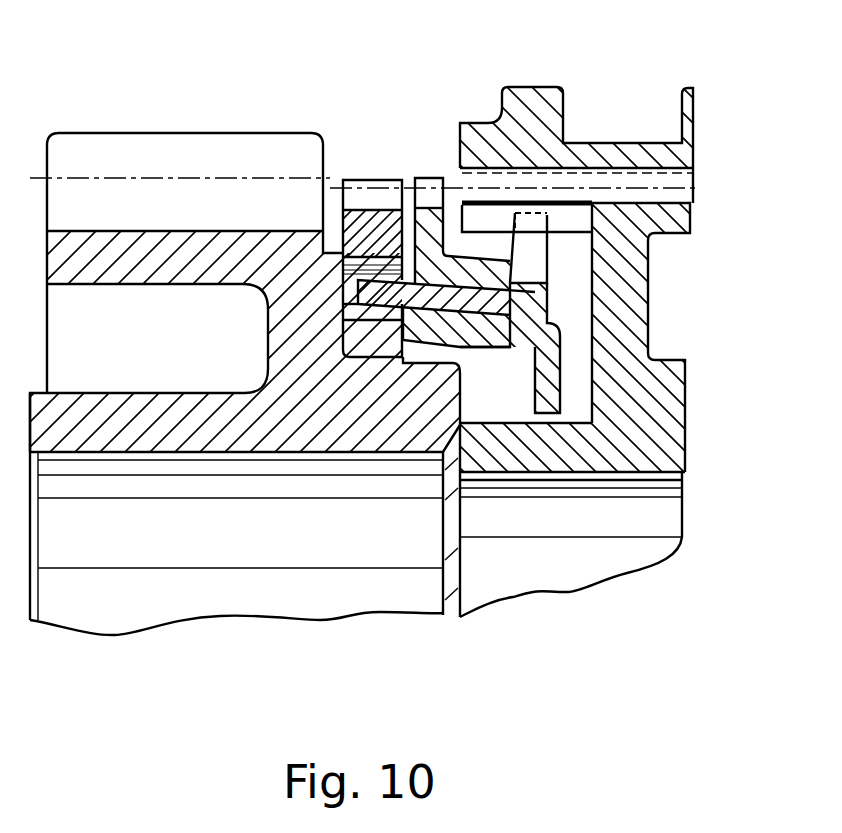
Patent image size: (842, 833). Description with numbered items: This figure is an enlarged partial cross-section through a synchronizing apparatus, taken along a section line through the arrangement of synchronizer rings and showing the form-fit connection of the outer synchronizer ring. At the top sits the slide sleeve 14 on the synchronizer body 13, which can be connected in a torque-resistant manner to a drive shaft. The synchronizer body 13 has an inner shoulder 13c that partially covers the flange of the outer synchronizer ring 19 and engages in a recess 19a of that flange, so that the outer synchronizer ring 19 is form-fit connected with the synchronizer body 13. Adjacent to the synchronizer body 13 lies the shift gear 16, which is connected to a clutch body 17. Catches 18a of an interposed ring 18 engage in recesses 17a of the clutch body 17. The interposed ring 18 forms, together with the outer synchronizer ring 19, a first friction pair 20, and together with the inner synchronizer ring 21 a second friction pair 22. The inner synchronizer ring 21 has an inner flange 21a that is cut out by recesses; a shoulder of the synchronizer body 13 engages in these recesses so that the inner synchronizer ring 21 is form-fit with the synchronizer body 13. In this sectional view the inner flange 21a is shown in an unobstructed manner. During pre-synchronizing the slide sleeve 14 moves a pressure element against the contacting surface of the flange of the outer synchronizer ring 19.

The synchronizer body 13 is at (657, 420).
The inner shoulder 13c is at (486, 214).
The slide sleeve 14 is at (550, 90).
The shift gear 16 is at (297, 365).
The clutch body 17 is at (375, 340).
The recess 17a is at (355, 312).
The interposed ring 18 is at (487, 288).
The catch 18a is at (378, 277).
The outer synchronizer ring 19 is at (455, 262).
The recess 19a is at (527, 243).
The first friction pair 20 is at (547, 276).
The inner synchronizer ring 21 is at (430, 343).
The inner flange 21a is at (622, 430).
The second friction pair 22 is at (512, 330).